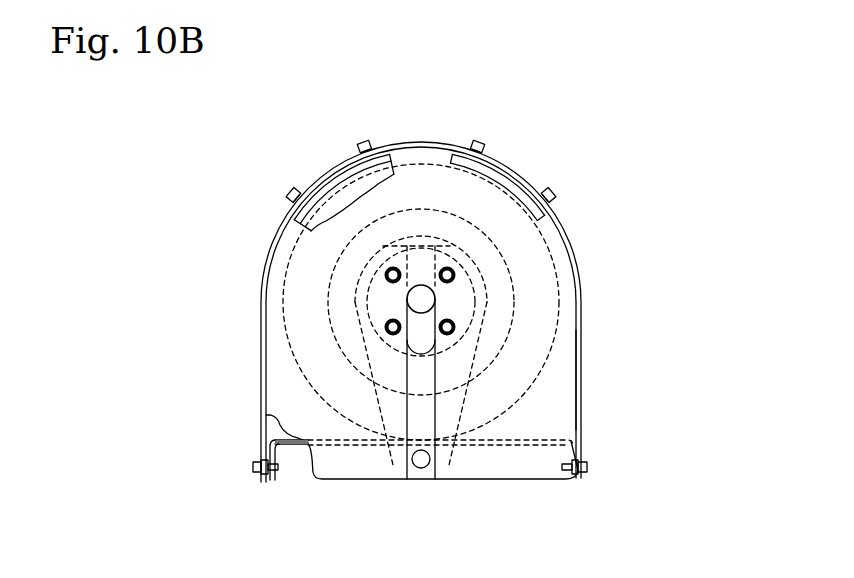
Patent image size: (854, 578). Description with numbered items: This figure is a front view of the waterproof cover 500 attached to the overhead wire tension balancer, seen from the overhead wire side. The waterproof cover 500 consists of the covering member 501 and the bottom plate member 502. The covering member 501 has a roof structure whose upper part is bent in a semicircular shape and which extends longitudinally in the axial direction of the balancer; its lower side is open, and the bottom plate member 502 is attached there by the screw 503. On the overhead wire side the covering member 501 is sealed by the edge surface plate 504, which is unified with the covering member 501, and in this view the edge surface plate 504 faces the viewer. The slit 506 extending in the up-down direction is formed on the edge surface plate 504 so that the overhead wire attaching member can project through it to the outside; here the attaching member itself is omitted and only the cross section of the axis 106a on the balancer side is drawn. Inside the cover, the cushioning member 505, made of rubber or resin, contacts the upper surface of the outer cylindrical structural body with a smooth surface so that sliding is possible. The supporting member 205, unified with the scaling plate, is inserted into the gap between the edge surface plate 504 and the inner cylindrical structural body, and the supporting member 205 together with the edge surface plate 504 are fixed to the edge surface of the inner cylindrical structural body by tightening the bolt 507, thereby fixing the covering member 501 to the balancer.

The bolt hole 106a is at (421, 286).
The supporting member 205 is at (407, 365).
The waterproof cover 500 is at (583, 316).
The covering member 501 is at (579, 390).
The bottom plate member 502 is at (295, 448).
The screw 503 is at (255, 466).
The edge surface plate 504 is at (566, 425).
The cushioning member 505 is at (326, 192).
The slit 506 is at (437, 363).
The bolt 507 is at (385, 325).